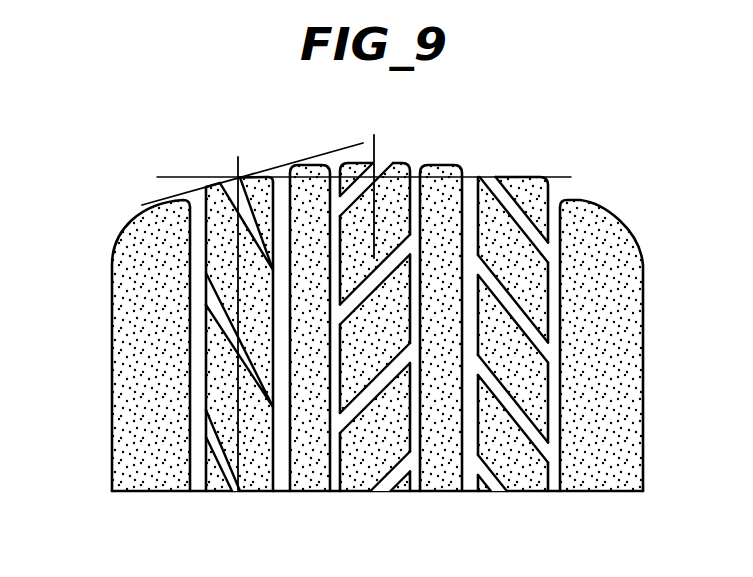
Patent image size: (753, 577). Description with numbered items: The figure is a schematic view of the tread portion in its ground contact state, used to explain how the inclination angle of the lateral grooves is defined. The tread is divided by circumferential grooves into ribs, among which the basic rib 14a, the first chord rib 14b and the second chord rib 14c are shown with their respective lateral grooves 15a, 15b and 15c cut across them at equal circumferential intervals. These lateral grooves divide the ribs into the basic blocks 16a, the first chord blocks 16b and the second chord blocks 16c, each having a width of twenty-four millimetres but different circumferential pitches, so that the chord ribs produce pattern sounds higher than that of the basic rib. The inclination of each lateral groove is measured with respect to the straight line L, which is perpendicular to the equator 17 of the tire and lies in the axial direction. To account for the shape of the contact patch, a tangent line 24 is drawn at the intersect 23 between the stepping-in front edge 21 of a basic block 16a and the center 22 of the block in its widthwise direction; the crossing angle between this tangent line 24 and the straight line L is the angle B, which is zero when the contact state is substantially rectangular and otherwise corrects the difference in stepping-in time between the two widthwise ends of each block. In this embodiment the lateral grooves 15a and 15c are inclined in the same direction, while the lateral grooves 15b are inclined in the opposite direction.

The basic rib 14a is at (161, 337).
The first chord rib 14b is at (362, 342).
The second chord rib 14c is at (555, 341).
The lateral grooves of the basic rib 15a is at (223, 331).
The lateral grooves of the first chord rib 15b is at (397, 492).
The lateral grooves of the second chord rib 15c is at (518, 221).
The basic blocks 16a is at (213, 380).
The first chord blocks 16b is at (347, 452).
The second chord blocks 16c is at (495, 203).
The equator of the tire 17 is at (376, 140).
The stepping-in front edge 21 is at (313, 163).
The widthwise center of the block 22 is at (257, 349).
The intersect 23 is at (238, 178).
The tangent line 24 is at (273, 178).
The crossing angle B is at (252, 160).
The straight line perpendicular to the equator L is at (557, 177).